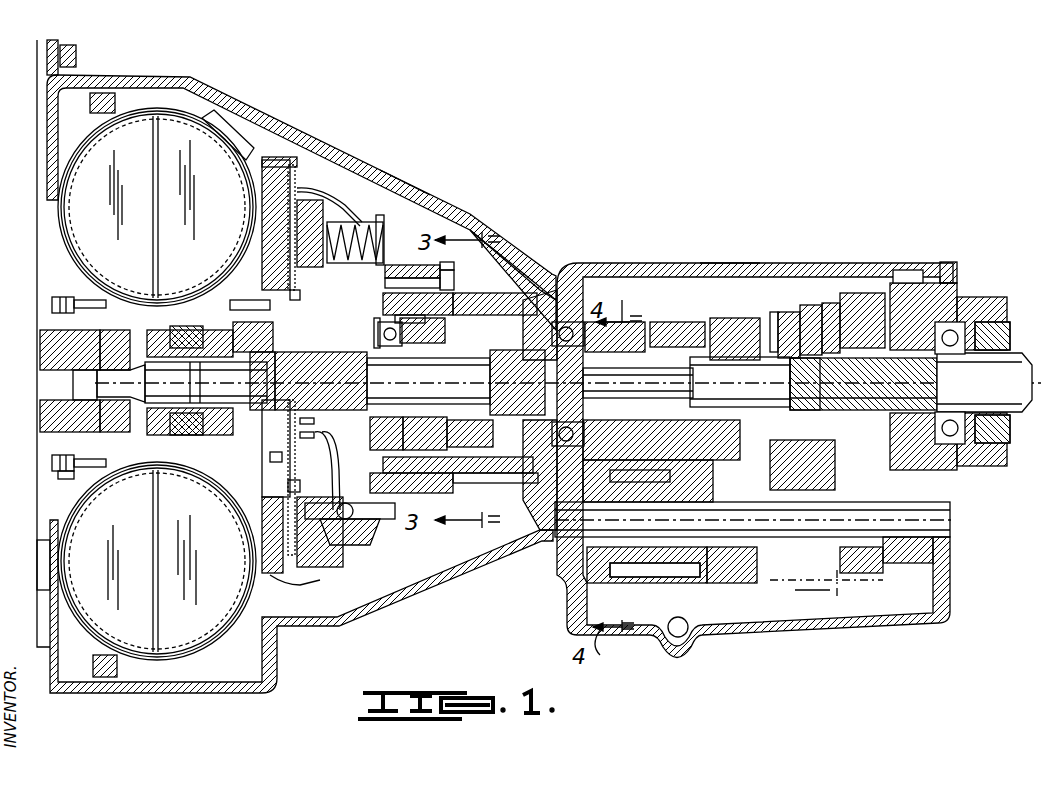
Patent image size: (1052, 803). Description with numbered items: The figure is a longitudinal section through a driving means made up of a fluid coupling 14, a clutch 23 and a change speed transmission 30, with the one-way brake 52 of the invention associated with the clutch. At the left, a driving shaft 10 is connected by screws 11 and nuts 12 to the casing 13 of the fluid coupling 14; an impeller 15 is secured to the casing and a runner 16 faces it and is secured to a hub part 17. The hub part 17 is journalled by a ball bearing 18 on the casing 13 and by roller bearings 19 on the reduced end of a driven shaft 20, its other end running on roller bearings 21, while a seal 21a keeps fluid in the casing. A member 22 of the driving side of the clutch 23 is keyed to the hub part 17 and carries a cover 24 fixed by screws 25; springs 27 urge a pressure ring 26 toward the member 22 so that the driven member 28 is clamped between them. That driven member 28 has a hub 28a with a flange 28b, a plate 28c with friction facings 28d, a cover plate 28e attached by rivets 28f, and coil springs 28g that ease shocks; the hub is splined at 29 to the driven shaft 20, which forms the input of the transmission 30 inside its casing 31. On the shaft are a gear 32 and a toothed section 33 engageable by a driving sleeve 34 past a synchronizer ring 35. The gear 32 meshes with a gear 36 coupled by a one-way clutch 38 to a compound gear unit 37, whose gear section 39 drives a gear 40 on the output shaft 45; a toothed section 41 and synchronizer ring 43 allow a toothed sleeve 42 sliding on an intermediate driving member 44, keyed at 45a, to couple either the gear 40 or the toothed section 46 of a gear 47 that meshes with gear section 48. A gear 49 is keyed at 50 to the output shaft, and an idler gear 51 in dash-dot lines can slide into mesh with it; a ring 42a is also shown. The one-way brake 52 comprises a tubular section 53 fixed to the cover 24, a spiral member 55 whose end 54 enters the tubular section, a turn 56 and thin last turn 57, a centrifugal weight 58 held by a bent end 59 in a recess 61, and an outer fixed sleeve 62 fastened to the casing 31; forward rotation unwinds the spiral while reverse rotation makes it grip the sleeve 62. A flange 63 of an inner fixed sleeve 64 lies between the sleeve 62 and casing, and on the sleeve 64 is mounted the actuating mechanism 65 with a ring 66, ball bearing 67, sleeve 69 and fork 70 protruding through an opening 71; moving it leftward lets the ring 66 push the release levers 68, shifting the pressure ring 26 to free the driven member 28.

The driving shaft 10 is at (40, 412).
The screws 11 is at (50, 463).
The nuts 12 is at (58, 476).
The casing 13 is at (66, 200).
The fluid coupling 14 is at (265, 150).
The impeller 15 is at (126, 168).
The runner 16 is at (194, 168).
The hub part 17 is at (150, 332).
The ball bearing 18 is at (100, 345).
The roller bearings 19 is at (141, 383).
The driven shaft 20 is at (206, 382).
The roller bearings 21 is at (259, 366).
The seal 21a is at (180, 438).
The member 22 is at (297, 190).
The clutch 23 is at (352, 212).
The cover 24 is at (408, 198).
The screws 25 is at (298, 170).
The pressure ring 26 is at (362, 548).
The springs 27 is at (372, 228).
The driven member 28 is at (288, 236).
The hub 28a is at (245, 310).
The flange 28b is at (320, 436).
The plate 28c is at (267, 456).
The friction facings 28d is at (300, 586).
The cover plate 28e is at (320, 423).
The rivets 28f is at (307, 488).
The coil springs 28g is at (302, 296).
The spline 29 is at (321, 381).
The transmission 30 is at (640, 258).
The casing 31 is at (712, 264).
The gear 32 is at (568, 370).
The toothed section 33 is at (625, 345).
The driving sleeve 34 is at (718, 318).
The synchronizer ring 35 is at (672, 322).
The gear 36 is at (648, 583).
The compound gear unit 37 is at (770, 570).
The one-way clutch 38 is at (630, 563).
The gear section 39 is at (737, 583).
The gear 40 is at (745, 355).
The toothed section 41 is at (772, 312).
The toothed sleeve 42 is at (811, 320).
The gear 42a is at (832, 303).
The synchronizer ring 43 is at (789, 322).
The intermediate driving member 44 is at (863, 394).
The output shaft 45 is at (863, 384).
The key 45a is at (805, 384).
The toothed section 46 is at (752, 519).
The gear 47 is at (862, 320).
The gear section 48 is at (848, 580).
The gear 49 is at (905, 280).
The key 50 is at (983, 383).
The idler gear 51 is at (818, 592).
The one-way brake 52 is at (478, 235).
The tubular section 53 is at (390, 268).
The outwardly extending end 54 is at (355, 251).
The spiral member 55 is at (410, 310).
The turn 56 is at (423, 304).
The last turn 57 is at (442, 284).
The centrifugal weight 58 is at (455, 278).
The bent end 59 is at (412, 277).
The recess 61 is at (455, 268).
The outer fixed sleeve 62 is at (505, 474).
The flange 63 is at (495, 485).
The inner fixed sleeve 64 is at (517, 382).
The actuating mechanism 65 is at (420, 437).
The ring 66 is at (374, 332).
The ball bearing 67 is at (398, 335).
The release levers 68 is at (336, 446).
The sleeve 69 is at (438, 345).
The fork 70 is at (495, 304).
The opening 71 is at (428, 381).